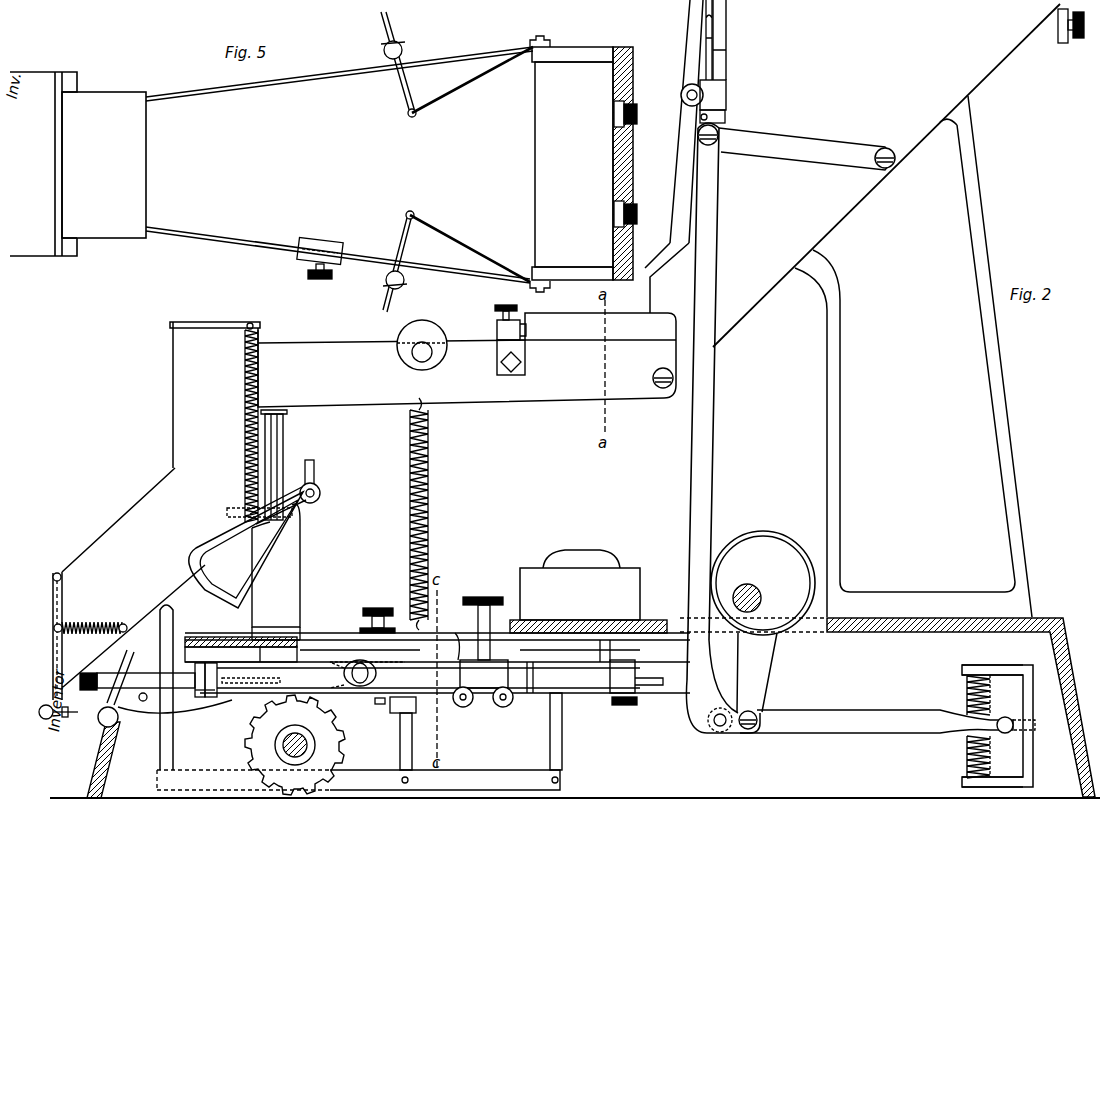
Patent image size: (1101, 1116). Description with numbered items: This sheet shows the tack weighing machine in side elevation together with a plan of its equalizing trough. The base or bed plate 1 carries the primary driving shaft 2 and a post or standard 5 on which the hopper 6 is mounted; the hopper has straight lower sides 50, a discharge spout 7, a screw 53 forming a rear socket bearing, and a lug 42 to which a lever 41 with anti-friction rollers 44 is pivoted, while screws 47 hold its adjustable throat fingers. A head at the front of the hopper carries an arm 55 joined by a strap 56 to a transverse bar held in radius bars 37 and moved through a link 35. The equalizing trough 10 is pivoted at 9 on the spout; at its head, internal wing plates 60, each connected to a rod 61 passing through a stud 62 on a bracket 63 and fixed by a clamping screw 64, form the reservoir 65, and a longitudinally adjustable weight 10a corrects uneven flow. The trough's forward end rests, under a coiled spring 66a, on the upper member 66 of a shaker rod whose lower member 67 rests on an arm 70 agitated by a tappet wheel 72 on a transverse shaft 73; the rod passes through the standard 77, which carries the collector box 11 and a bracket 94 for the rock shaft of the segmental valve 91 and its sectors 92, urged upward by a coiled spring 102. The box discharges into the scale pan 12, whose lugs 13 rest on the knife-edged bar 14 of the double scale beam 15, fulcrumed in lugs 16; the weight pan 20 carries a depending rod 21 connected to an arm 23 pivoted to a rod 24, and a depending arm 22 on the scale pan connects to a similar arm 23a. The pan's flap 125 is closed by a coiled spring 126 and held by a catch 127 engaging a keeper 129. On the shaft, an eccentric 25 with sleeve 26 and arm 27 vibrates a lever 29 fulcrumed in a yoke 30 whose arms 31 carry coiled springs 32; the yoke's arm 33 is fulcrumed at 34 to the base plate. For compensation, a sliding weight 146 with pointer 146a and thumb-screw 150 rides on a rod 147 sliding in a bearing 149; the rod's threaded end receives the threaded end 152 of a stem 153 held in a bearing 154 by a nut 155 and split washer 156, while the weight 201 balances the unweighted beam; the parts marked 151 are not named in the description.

In FIG. 2, the base plate 1 is at (1070, 642).
In FIG. 2, the primary driving shaft 2 is at (762, 600).
In FIG. 2, the post or standard 5 is at (913, 356).
In FIG. 5, the hopper 6 is at (628, 175).
In FIG. 2, the hopper 6 is at (990, 78).
In FIG. 5, the discharge spout 7 is at (572, 163).
In FIG. 2, the discharge spout 7 is at (723, 430).
In FIG. 5, the pivot 9 is at (542, 37).
In FIG. 2, the pivot 9 is at (656, 374).
In FIG. 5, the equalizing trough 10 is at (339, 165).
In FIG. 2, the equalizing trough 10 is at (467, 360).
In FIG. 5, the weight 10a is at (320, 246).
In FIG. 2, the weight 10a is at (422, 343).
In FIG. 5, the collector box 11 is at (104, 165).
In FIG. 2, the collector box 11 is at (215, 395).
In FIG. 5, the scale pan 12 is at (43, 164).
In FIG. 2, the scale pan 12 is at (129, 584).
In FIG. 2, the depending lugs 13 is at (129, 677).
In FIG. 2, the knife-edged bar 14 is at (143, 712).
In FIG. 2, the double scale beam 15 is at (364, 698).
In FIG. 2, the lugs 16 is at (404, 658).
In FIG. 2, the weight pan 20 is at (588, 606).
In FIG. 2, the depending rod 21 is at (563, 747).
In FIG. 2, the depending arm 22 is at (170, 750).
In FIG. 2, the arm 23 is at (445, 780).
In FIG. 2, the arm 23a is at (243, 777).
In FIG. 2, the rod 24 is at (400, 752).
In FIG. 2, the eccentric 25 is at (763, 583).
In FIG. 2, the sleeve 26 is at (755, 532).
In FIG. 2, the arm 27 is at (757, 672).
In FIG. 2, the lever 29 is at (820, 735).
In FIG. 2, the yoke 30 is at (1031, 694).
In FIG. 2, the arms 31 is at (992, 675).
In FIG. 2, the coiled springs 32 is at (966, 693).
In FIG. 2, the arm 33 is at (816, 710).
In FIG. 2, the fulcrum 34 is at (1006, 736).
In FIG. 2, the link 35 is at (712, 190).
In FIG. 2, the radius bar 37 is at (807, 149).
In FIG. 2, the lever 41 is at (688, 58).
In FIG. 2, the lug 42 is at (728, 97).
In FIG. 2, the anti-friction rollers 44 is at (652, 275).
In FIG. 5, the screws 47 is at (612, 105).
In FIG. 2, the straight sides 50 is at (857, 101).
In FIG. 2, the screw 53 is at (1068, 40).
In FIG. 2, the arm 55 is at (713, 42).
In FIG. 2, the strap 56 is at (727, 66).
In FIG. 5, the wing plate 60 is at (471, 164).
In FIG. 2, the wing plate 60 is at (600, 329).
In FIG. 5, the rod 61 is at (383, 18).
In FIG. 2, the rod 61 is at (497, 345).
In FIG. 2, the stud 62 is at (497, 329).
In FIG. 5, the bracket 63 is at (384, 51).
In FIG. 2, the bracket 63 is at (525, 358).
In FIG. 5, the clamping screw 64 is at (400, 46).
In FIG. 2, the clamping screw 64 is at (496, 304).
In FIG. 5, the reservoir 65 is at (492, 171).
In FIG. 2, the upper member of shaker rod 66 is at (283, 428).
In FIG. 2, the coiled spring 66a is at (409, 516).
In FIG. 2, the lower member of shaker rod 67 is at (241, 650).
In FIG. 2, the arm 70 is at (228, 700).
In FIG. 2, the tappet wheel 72 is at (250, 751).
In FIG. 2, the transverse shaft 73 is at (284, 738).
In FIG. 2, the standard 77 is at (276, 572).
In FIG. 2, the swinging valve 91 is at (214, 592).
In FIG. 2, the sector 92 is at (252, 580).
In FIG. 2, the bracket 94 is at (274, 482).
In FIG. 2, the coiled spring 102 is at (244, 386).
In FIG. 2, the flap 125 is at (62, 602).
In FIG. 2, the coiled spring 126 is at (72, 636).
In FIG. 2, the catch 127 is at (76, 713).
In FIG. 2, the keeper 129 is at (50, 720).
In FIG. 2, the weight 146 is at (494, 666).
In FIG. 2, the pointer 146a is at (460, 633).
In FIG. 2, the rod 147 is at (316, 688).
In FIG. 2, the bearing 149 is at (530, 700).
In FIG. 2, the thumb-screw 150 is at (483, 619).
In FIG. 2, the roller 151 is at (464, 707).
In FIG. 2, the threaded end 152 is at (146, 712).
In FIG. 2, the stem 153 is at (137, 683).
In FIG. 2, the bearing 154 is at (204, 694).
In FIG. 2, the nut 155 is at (213, 670).
In FIG. 2, the split washer 156 is at (189, 673).
In FIG. 2, the weight 201 is at (633, 664).